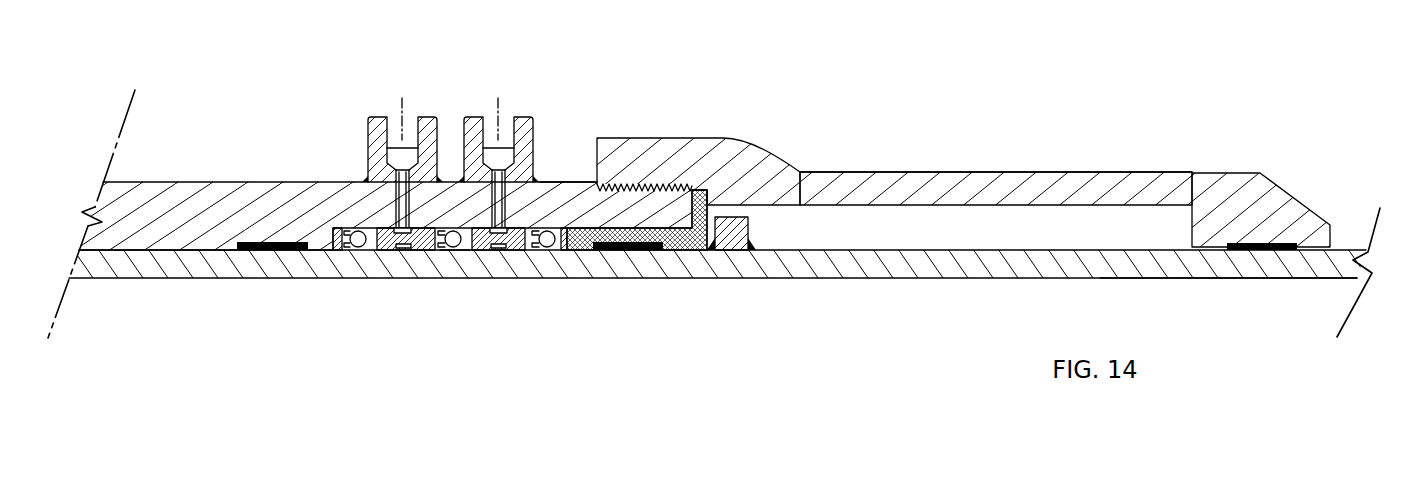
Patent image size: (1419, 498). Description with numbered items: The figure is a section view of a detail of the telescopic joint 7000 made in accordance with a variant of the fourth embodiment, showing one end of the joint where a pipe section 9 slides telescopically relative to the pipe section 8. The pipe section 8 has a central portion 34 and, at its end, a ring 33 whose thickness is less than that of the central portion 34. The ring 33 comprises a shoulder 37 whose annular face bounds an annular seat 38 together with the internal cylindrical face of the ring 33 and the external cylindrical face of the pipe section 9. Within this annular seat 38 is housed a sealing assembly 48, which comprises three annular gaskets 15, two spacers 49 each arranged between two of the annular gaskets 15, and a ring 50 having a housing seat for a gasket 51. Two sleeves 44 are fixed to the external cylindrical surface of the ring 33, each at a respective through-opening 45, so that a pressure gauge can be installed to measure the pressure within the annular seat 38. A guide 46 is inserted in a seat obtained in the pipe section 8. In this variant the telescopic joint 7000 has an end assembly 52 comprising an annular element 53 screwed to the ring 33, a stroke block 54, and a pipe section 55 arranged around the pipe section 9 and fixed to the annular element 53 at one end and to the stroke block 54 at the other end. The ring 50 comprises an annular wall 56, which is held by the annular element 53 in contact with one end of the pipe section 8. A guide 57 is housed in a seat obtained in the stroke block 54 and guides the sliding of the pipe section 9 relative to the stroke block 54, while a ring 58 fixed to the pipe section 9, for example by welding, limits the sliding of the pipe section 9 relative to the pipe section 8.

The pipe section 8 is at (147, 207).
The pipe section 9 is at (1288, 263).
The annular gaskets 15 is at (350, 248).
The ring 33 is at (558, 197).
The central portion 34 is at (173, 233).
The shoulder 37 is at (332, 238).
The annular seat 38 is at (463, 260).
The sleeve 44 is at (375, 130).
The through-opening 45 is at (383, 201).
The guide 46 is at (262, 250).
The sealing assembly 48 is at (446, 264).
The spacers 49 is at (388, 248).
The ring 50 is at (585, 237).
The gasket 51 is at (632, 250).
The end assembly 52 is at (597, 75).
The annular element 53 is at (747, 162).
The stroke block 54 is at (1253, 207).
The pipe section 55 is at (878, 190).
The annular wall 56 is at (698, 225).
The guide 57 is at (1238, 250).
The ring 58 is at (730, 238).
The telescopic joint 7000 is at (993, 130).